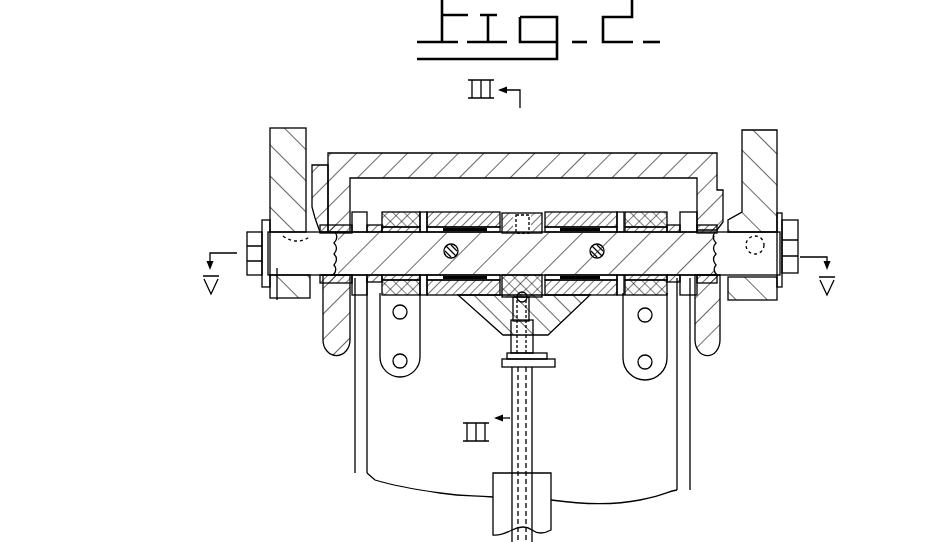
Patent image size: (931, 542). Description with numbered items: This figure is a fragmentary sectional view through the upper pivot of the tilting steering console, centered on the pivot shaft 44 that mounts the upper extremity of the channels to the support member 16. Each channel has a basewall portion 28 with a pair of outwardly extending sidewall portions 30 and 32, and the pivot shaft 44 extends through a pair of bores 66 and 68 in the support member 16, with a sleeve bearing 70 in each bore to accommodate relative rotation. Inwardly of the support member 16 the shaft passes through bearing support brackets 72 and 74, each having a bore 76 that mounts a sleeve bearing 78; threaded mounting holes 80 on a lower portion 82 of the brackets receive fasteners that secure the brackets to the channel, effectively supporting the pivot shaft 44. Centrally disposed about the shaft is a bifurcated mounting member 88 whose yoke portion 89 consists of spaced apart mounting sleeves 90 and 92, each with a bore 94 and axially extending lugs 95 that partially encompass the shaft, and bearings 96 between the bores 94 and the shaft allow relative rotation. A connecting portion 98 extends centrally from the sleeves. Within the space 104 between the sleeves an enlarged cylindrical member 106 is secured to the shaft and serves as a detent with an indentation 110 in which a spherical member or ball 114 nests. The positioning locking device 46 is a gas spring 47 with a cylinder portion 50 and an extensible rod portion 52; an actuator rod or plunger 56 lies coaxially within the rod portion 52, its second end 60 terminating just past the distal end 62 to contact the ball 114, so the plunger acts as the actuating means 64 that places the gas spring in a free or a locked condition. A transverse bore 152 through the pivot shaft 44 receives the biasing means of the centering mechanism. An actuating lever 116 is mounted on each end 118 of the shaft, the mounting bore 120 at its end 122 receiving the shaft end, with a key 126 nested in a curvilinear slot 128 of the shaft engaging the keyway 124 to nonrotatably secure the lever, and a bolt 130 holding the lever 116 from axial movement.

The support member 16 is at (703, 160).
The basewall portion 28 is at (619, 462).
The sidewall portion 30 is at (363, 442).
The sidewall portion 32 is at (692, 397).
The pivot shaft 44 is at (313, 265).
The positioning locking device 46 is at (476, 507).
The gas spring 47 is at (559, 476).
The cylinder portion 50 is at (543, 518).
The rod portion 52 is at (531, 404).
The actuator rod or plunger 56 is at (527, 455).
The second end 60 is at (512, 378).
The distal end 62 is at (540, 332).
The actuating means 64 is at (548, 323).
The bore 66 is at (318, 226).
The bore 68 is at (728, 292).
The sleeve bearing 70 is at (328, 310).
The bearing support bracket 72 is at (379, 400).
The bearing support bracket 74 is at (664, 372).
The bore 76 is at (386, 225).
The sleeve bearing 78 is at (374, 224).
The threaded mounting hole 80 is at (394, 364).
The lower portion 82 is at (398, 318).
The bifurcated mounting member 88 is at (392, 374).
The yoke portion 89 is at (511, 347).
The mounting sleeve 90 is at (456, 197).
The mounting sleeve 92 is at (584, 197).
The bore 94 is at (440, 222).
The lug 95 is at (448, 210).
The bearing 96 is at (486, 222).
The connecting portion 98 is at (505, 366).
The space 104 is at (520, 197).
The cylindrical member 106 is at (537, 228).
The indentation 110 is at (540, 292).
The spherical member or ball 114 is at (518, 300).
The actuating lever 116 is at (289, 137).
The end 118 is at (277, 300).
The mounting bore 120 is at (776, 233).
The end 122 is at (758, 198).
The keyway 124 is at (266, 230).
The key 126 is at (770, 230).
The curvilinear slot 128 is at (741, 248).
The bolt 130 is at (265, 280).
The bore 152 is at (443, 253).